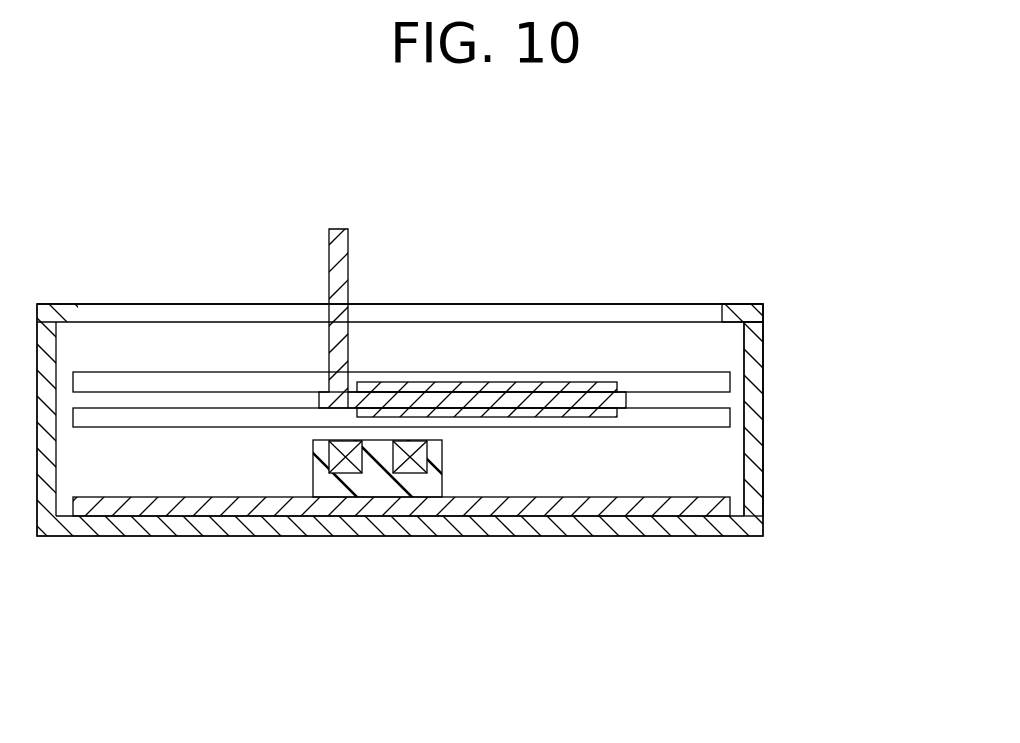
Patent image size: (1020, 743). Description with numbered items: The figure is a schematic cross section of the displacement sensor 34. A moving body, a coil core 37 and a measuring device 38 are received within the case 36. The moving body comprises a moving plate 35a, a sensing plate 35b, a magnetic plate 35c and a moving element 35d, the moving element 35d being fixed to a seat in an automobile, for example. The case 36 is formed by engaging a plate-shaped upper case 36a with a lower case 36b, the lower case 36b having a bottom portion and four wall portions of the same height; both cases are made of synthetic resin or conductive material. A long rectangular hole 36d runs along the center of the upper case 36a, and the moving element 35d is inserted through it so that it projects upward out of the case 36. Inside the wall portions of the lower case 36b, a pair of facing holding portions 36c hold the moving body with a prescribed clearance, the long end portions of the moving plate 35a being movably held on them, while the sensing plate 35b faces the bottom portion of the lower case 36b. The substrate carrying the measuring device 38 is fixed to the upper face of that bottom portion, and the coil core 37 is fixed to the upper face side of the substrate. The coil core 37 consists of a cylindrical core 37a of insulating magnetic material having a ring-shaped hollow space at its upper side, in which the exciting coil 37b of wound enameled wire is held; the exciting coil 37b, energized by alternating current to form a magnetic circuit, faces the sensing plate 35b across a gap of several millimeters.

The displacement sensor 34 is at (210, 281).
The moving plate 35a is at (627, 393).
The sensing plate 35b is at (542, 417).
The magnetic plate 35c is at (418, 382).
The moving element 35d is at (328, 268).
The case 36 is at (858, 202).
The upper case 36a is at (764, 307).
The lower case 36b is at (764, 353).
The holding portions 36c is at (730, 411).
The long rectangular hole 36d is at (113, 305).
The coil core 37 is at (313, 468).
The core 37a is at (378, 452).
The exciting coil 37b is at (350, 467).
The measuring device 38 is at (647, 497).